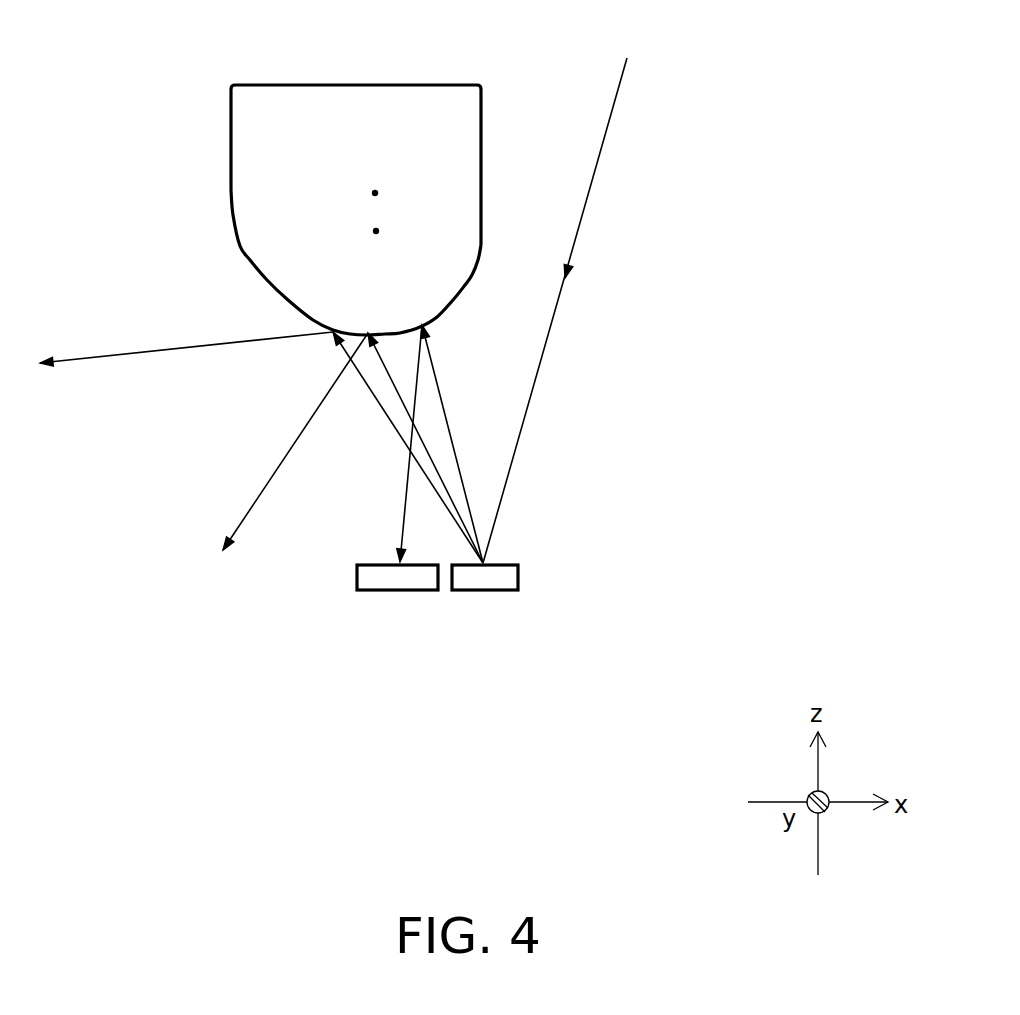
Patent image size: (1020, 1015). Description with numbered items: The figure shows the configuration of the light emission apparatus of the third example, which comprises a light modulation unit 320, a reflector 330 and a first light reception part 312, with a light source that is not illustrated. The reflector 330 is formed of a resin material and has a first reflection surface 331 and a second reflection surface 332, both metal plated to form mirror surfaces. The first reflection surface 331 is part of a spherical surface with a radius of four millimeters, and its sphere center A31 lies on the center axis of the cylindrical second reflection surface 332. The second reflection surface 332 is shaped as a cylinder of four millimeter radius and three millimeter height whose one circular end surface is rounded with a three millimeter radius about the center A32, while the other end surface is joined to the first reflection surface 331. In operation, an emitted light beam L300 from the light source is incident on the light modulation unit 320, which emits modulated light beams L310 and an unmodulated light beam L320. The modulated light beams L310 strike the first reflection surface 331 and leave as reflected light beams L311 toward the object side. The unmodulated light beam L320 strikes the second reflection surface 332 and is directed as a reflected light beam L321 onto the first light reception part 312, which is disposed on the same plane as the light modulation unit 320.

The reflector 330 is at (222, 76).
The first reflection surface 331 is at (240, 247).
The second reflection surface 332 is at (470, 281).
The center of the sphere constituting the first reflection surface A31 is at (373, 192).
The center of the rounded end surface of the second reflection surface A32 is at (378, 229).
The emitted light beam L300 is at (598, 161).
The modulated light beams L310 is at (400, 410).
The reflected light beams L311 is at (260, 488).
The unmodulated light beam L320 is at (455, 441).
The reflected light beam L321 is at (402, 514).
The first light reception part 312 is at (392, 590).
The light modulation unit 320 is at (487, 582).